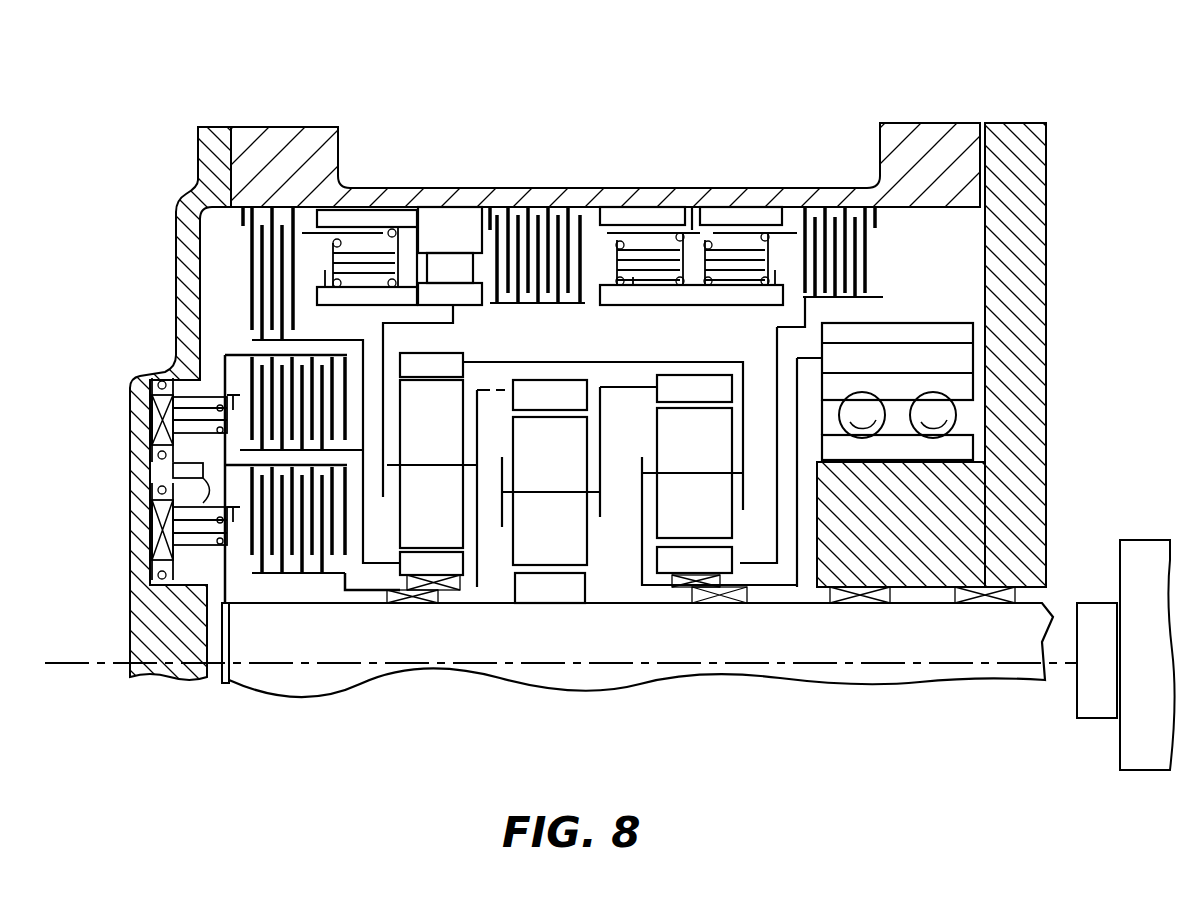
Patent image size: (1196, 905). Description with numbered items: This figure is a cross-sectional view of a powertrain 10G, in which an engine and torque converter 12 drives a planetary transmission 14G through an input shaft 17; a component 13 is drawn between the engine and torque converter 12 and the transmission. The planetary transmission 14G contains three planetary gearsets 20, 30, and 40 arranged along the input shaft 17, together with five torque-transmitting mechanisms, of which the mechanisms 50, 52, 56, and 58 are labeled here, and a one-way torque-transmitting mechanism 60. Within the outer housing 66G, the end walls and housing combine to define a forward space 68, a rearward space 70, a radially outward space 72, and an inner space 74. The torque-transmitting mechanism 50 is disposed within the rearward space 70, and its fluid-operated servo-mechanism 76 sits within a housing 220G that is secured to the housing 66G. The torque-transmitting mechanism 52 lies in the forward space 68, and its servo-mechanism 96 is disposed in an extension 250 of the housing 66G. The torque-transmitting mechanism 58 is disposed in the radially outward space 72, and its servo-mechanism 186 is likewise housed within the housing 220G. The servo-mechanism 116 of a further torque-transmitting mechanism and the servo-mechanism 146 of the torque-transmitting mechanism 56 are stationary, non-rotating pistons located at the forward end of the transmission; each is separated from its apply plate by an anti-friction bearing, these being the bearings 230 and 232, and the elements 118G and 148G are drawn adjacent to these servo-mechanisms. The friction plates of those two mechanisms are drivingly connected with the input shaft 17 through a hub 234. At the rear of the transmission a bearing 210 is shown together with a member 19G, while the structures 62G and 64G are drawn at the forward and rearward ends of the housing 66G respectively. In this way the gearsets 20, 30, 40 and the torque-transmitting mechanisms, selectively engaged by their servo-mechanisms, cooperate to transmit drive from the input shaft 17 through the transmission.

The powertrain 10G is at (109, 159).
The engine and torque converter 12 is at (1151, 529).
The torque converter 13 is at (1090, 591).
The planetary transmission 14G is at (636, 96).
The input shaft 17 is at (915, 643).
The support member 19G is at (963, 360).
The planetary gearset 20 is at (448, 603).
The planetary gearset 30 is at (557, 615).
The planetary gearset 40 is at (676, 617).
The torque-transmitting mechanism 50 is at (801, 175).
The torque-transmitting mechanism 52 is at (329, 192).
The torque-transmitting mechanism 56 is at (214, 578).
The torque-transmitting mechanism 58 is at (590, 179).
The one-way torque-transmitting mechanism 60 is at (480, 213).
The brake 62G is at (135, 422).
The end support wall 64G is at (1030, 423).
The housing 66G is at (745, 187).
The forward space 68 is at (235, 317).
The rearward space 70 is at (966, 251).
The radially outward space 72 is at (586, 244).
The inner space 74 is at (503, 557).
The servo-mechanism 76 is at (708, 212).
The servo-mechanism 96 is at (395, 214).
The servo-mechanism 116 is at (137, 438).
The housing portion 118G is at (178, 357).
The servo-mechanism 146 is at (135, 521).
The brake 148G is at (130, 471).
The servo-mechanism 186 is at (678, 210).
The bearing 210 is at (976, 393).
The housing 220G is at (693, 228).
The bearing 230 is at (133, 373).
The bearing 232 is at (133, 567).
The hub 234 is at (231, 605).
The extension 250 is at (456, 203).